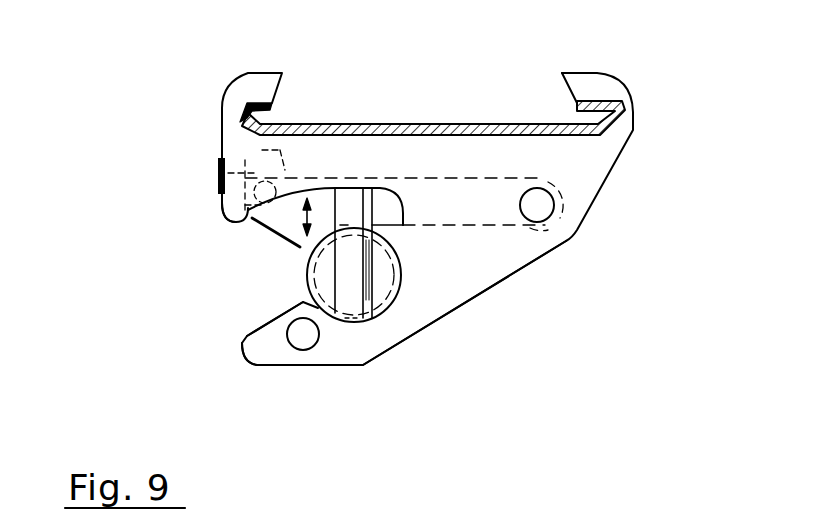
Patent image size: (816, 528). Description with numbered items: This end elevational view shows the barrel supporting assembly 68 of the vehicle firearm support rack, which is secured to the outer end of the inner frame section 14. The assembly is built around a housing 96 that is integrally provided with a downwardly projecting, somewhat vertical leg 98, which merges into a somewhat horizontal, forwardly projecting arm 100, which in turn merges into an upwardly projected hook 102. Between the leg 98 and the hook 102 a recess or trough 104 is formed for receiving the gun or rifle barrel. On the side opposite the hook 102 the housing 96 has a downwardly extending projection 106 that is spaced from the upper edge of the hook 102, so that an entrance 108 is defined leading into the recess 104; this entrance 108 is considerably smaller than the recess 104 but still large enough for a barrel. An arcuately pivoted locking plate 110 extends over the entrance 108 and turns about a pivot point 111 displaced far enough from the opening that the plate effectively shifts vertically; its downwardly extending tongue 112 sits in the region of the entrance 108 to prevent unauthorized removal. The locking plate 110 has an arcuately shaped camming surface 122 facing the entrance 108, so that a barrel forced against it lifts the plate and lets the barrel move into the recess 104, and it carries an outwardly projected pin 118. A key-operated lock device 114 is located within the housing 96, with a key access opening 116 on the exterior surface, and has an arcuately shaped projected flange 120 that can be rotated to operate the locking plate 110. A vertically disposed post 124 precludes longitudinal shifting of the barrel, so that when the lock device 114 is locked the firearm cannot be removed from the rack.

The inner frame section 14 is at (375, 75).
The barrel supporting assembly 68 is at (204, 93).
The housing 96 is at (583, 158).
The leg 98 is at (475, 278).
The arm 100 is at (327, 350).
The hook 102 is at (270, 318).
The recess 104 is at (395, 233).
The projection 106 is at (232, 212).
The entrance 108 is at (247, 307).
The locking plate 110 is at (272, 230).
The pivot point 111 is at (537, 205).
The tongue 112 is at (298, 249).
The key-operated lock device 114 is at (219, 166).
The key access opening 116 is at (221, 178).
The pin 118 is at (305, 172).
The flange 120 is at (272, 154).
The camming surface 122 is at (263, 226).
The post 124 is at (355, 288).